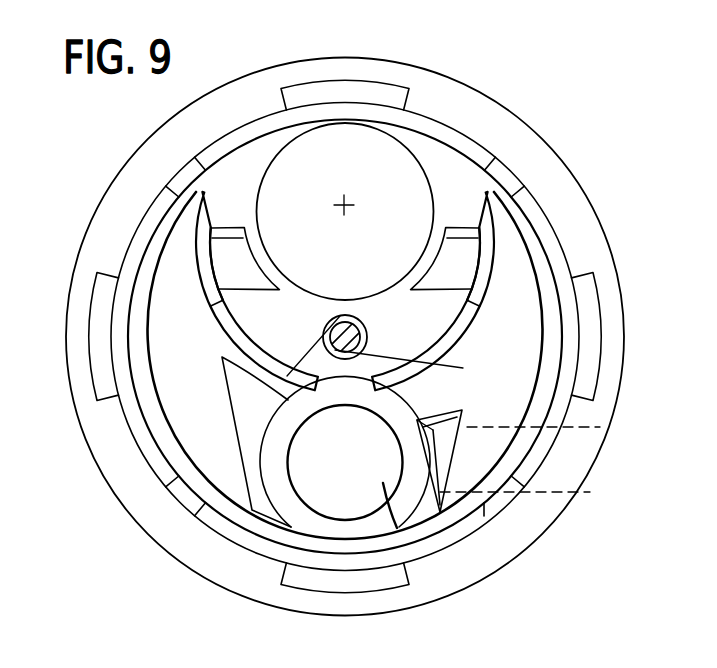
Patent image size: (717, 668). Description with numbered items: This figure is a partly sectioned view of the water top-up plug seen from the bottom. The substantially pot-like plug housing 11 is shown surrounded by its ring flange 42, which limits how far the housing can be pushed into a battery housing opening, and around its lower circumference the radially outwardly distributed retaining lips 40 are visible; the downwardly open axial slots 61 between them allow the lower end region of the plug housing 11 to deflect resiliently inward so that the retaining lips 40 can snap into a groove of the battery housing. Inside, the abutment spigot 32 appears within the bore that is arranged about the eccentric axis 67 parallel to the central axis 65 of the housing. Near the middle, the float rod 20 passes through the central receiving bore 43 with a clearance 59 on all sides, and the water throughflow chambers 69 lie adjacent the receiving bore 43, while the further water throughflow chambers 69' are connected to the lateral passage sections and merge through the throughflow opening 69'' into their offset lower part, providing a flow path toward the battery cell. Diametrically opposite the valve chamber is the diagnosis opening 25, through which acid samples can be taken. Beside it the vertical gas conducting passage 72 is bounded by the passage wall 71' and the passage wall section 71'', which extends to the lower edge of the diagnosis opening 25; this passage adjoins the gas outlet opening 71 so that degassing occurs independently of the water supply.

The plug housing 11 is at (78, 434).
The ring flange 42 is at (253, 88).
The retaining lips 40 is at (380, 88).
The axial slots 61 is at (190, 166).
The abutment spigot 32 is at (403, 150).
The eccentric axis 67 is at (341, 196).
The water throughflow chambers 69 is at (342, 291).
The water throughflow chambers 69' is at (345, 264).
The throughflow opening 69'' is at (345, 237).
The float rod 20 is at (353, 310).
The receiving bore 43 is at (336, 308).
The clearance 59 is at (464, 368).
The central axis 65 is at (300, 393).
The diagnosis opening 25 is at (385, 488).
The gas conducting passage 72 is at (463, 428).
The passage wall 71' is at (392, 434).
The gas outlet opening 71 is at (551, 450).
The passage wall section 71'' is at (533, 490).